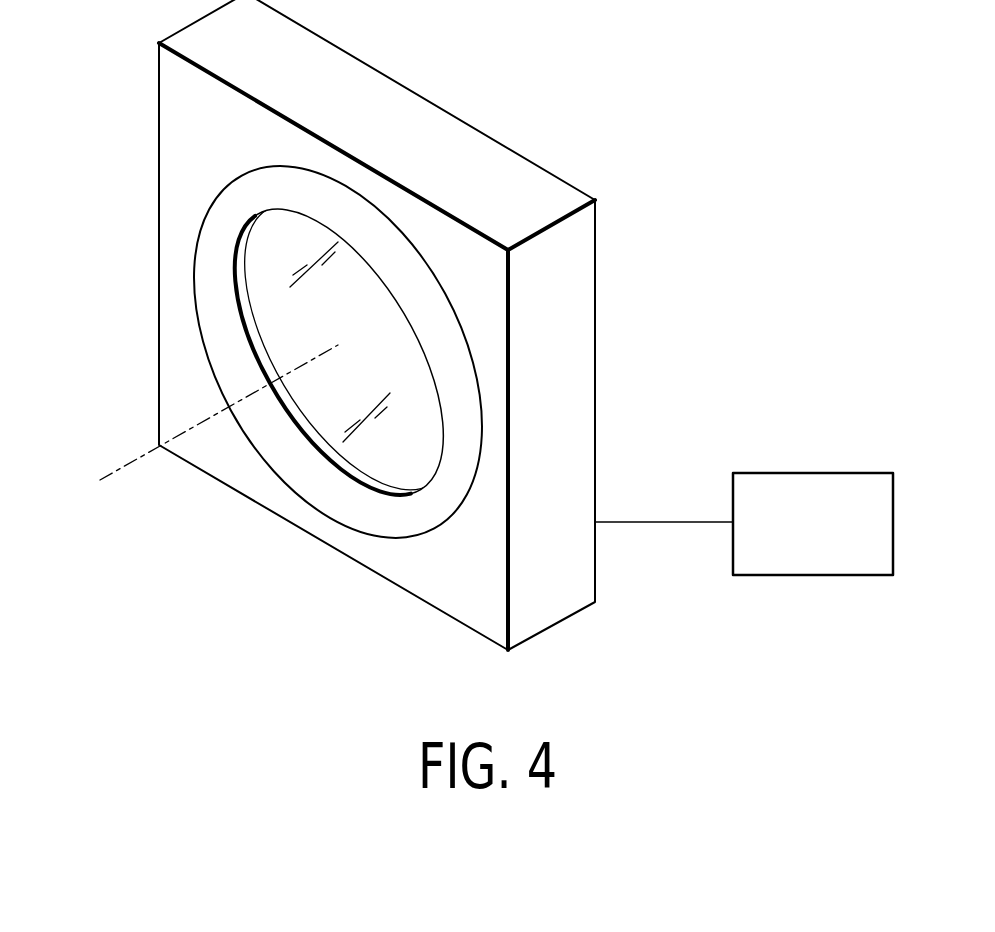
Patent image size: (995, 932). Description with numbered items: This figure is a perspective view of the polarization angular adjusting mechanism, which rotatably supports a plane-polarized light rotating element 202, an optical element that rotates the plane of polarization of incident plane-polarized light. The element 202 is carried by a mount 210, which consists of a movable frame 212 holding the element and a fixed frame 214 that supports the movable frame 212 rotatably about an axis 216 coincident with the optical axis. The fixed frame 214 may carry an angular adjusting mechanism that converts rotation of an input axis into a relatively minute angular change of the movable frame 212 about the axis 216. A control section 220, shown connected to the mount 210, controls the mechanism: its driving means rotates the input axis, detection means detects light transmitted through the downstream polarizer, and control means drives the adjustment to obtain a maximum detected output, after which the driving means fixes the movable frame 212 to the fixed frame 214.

The plane-polarized light rotating element 202 is at (363, 452).
The mount 210 is at (156, 137).
The movable frame 212 is at (201, 258).
The fixed frame 214 is at (533, 175).
The axis 216 is at (117, 470).
The control section 220 is at (811, 473).